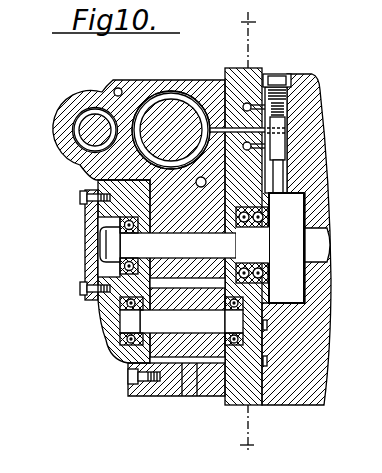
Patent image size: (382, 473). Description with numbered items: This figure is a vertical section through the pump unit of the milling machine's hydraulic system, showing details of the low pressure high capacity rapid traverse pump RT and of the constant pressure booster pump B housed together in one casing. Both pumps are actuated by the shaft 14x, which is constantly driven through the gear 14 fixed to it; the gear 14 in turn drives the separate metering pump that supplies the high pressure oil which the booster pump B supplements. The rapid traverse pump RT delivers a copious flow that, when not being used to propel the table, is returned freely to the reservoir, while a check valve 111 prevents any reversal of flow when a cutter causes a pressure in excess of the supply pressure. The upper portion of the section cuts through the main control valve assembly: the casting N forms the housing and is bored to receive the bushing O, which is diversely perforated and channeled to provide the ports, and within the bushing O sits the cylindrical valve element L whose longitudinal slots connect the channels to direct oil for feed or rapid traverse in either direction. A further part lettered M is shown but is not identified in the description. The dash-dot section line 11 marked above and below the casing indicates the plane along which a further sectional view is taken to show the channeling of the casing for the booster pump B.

The boss / bore M is at (83, 128).
The valve element L is at (157, 115).
The casting N is at (187, 97).
The bushing O is at (193, 100).
The check valve 111 is at (201, 190).
The booster pump B is at (314, 241).
The gear 14 is at (336, 240).
The shaft 14x is at (323, 237).
The rapid traverse pump RT is at (122, 282).
The section line 11 is at (240, 233).